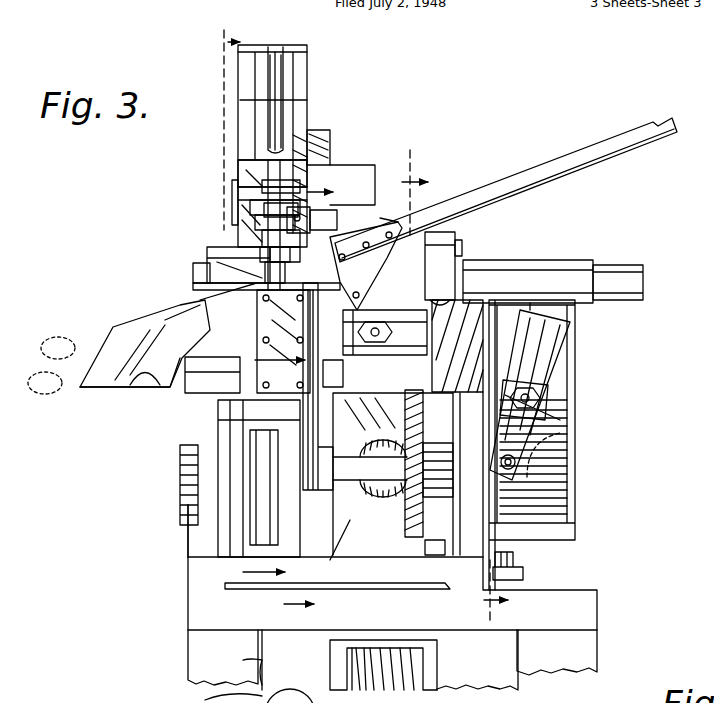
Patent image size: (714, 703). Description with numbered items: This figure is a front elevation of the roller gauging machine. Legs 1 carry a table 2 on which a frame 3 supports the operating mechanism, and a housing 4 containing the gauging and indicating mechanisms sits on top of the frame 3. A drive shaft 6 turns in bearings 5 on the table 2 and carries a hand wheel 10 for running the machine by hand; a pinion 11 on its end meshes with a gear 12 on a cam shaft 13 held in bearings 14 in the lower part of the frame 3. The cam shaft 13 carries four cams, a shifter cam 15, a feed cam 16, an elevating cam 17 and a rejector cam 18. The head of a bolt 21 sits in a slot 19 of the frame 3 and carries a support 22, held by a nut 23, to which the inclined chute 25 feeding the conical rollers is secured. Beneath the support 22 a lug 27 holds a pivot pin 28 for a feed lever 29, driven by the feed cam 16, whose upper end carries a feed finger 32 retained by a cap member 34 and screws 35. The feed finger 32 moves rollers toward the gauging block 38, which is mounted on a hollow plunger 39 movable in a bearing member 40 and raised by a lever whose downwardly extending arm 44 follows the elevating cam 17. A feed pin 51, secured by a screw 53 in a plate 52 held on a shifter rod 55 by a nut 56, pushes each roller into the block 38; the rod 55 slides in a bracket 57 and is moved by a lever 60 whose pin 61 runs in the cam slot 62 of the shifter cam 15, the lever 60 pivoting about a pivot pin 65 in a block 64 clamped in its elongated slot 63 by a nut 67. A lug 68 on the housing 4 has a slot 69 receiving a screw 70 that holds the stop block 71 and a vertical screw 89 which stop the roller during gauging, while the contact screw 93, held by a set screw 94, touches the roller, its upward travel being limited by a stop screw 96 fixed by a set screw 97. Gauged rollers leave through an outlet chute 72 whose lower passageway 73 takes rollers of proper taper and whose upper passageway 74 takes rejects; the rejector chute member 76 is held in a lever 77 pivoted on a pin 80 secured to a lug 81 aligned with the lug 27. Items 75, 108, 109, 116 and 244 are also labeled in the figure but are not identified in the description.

The legs 1 is at (270, 668).
The table 2 is at (188, 612).
The frame 3 is at (188, 510).
The housing 4 is at (252, 110).
The bearings 5 is at (386, 518).
The drive shaft 6 is at (370, 605).
The hand wheel 10 is at (258, 290).
The pinion 11 is at (390, 520).
The gear 12 is at (445, 520).
The cam shaft 13 is at (350, 540).
The bearings 14 is at (180, 470).
The shifter cam 15 is at (560, 432).
The feed cam 16 is at (266, 660).
The elevating cam 17 is at (262, 535).
The rejector cam 18 is at (218, 520).
The slot 19 is at (440, 325).
The bolt 21 is at (382, 345).
The support 22 is at (370, 280).
The nut 23 is at (482, 398).
The chute 25 is at (502, 187).
The lug 27 is at (397, 395).
The pivot pin 28 is at (425, 420).
The feed lever 29 is at (360, 655).
The feed finger 32 is at (335, 215).
The cap member 34 is at (265, 268).
The screws 35 is at (262, 250).
The gauging block 38 is at (248, 284).
The hollow plunger 39 is at (193, 275).
The bearing member 40 is at (215, 395).
The downwardly extending arm 44 is at (230, 418).
The feed pin 51 is at (460, 246).
The plate 52 is at (450, 270).
The screw 53 is at (435, 235).
The shifter rod 55 is at (500, 268).
The nut 56 is at (545, 285).
The bracket 57 is at (570, 300).
The lever 60 is at (550, 340).
The pin 61 is at (515, 468).
The cam slot 62 is at (520, 552).
The elongated slot 63 is at (548, 380).
The block 64 is at (545, 408).
The pivot pin 65 is at (565, 450).
The nut 67 is at (565, 392).
The lug 68 is at (325, 160).
The slot 69 is at (340, 200).
The screw 70 is at (300, 205).
The block 71 is at (282, 190).
The outlet chute 72 is at (118, 348).
The lower passageway 73 is at (100, 385).
The upper passageway 74 is at (115, 380).
The bracket 75 is at (212, 265).
The rejector chute member 76 is at (272, 252).
The lever 77 is at (160, 322).
The pin 80 is at (180, 340).
The lug 81 is at (195, 330).
The screw 89 is at (295, 225).
The contact screw 93 is at (252, 205).
The set screw 94 is at (258, 222).
The stop screw 96 is at (236, 175).
The set screw 97 is at (250, 175).
The column web 108 is at (250, 108).
The column 109 is at (272, 52).
The slot 116 is at (280, 48).
The pin 244 is at (388, 225).